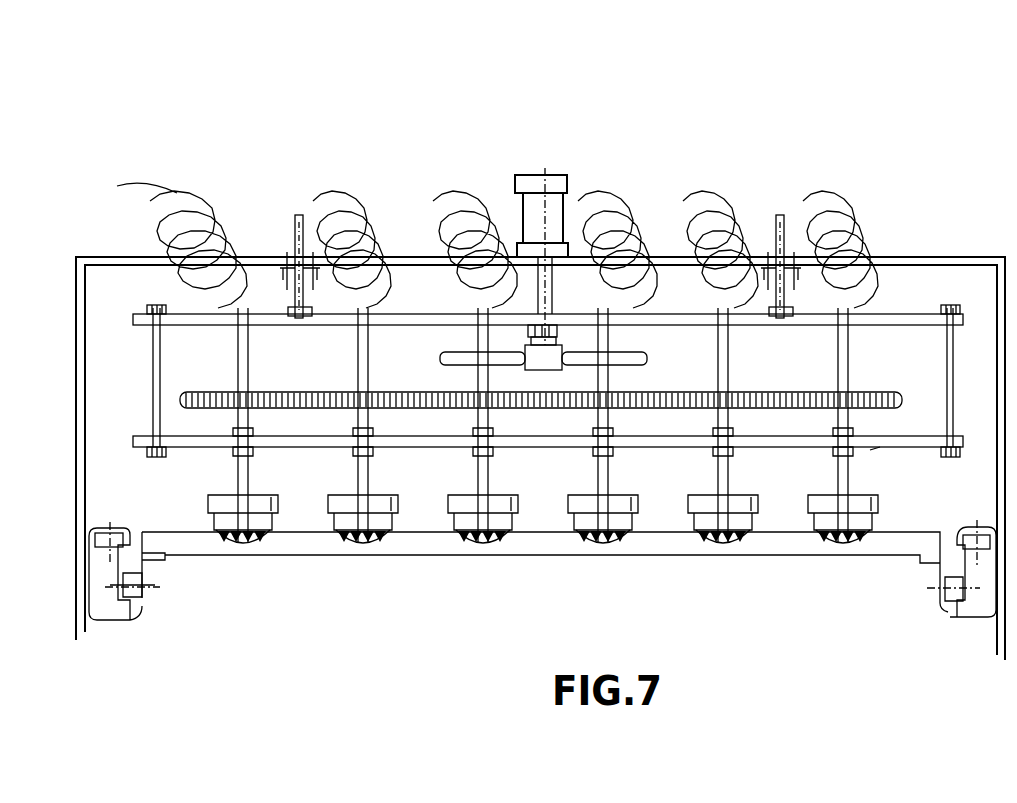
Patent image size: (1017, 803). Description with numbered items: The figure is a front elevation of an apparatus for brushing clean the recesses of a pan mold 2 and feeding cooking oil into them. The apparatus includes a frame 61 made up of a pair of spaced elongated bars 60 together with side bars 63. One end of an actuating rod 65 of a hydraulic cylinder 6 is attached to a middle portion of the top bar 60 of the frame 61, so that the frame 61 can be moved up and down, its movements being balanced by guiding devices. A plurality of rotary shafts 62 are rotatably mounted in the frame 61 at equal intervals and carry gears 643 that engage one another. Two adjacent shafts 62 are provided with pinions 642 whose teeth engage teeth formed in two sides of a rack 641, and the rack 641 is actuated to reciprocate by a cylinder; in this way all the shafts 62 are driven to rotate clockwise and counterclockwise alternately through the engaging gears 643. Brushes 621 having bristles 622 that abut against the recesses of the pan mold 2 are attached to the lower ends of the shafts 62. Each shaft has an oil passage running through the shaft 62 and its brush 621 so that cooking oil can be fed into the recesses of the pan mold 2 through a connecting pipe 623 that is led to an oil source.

The pan mold 2 is at (672, 545).
The hydraulic cylinder 6 is at (553, 205).
The elongated bars 60 is at (896, 318).
The frame 61 is at (870, 452).
The rotary shafts 62 is at (370, 380).
The side bars 63 is at (155, 398).
The actuating rod 65 is at (535, 305).
The brushes 621 is at (497, 503).
The bristles 622 is at (355, 546).
The connecting pipe 623 is at (212, 215).
The rack 641 is at (546, 352).
The pinions 642 is at (463, 357).
The gears 643 is at (206, 393).